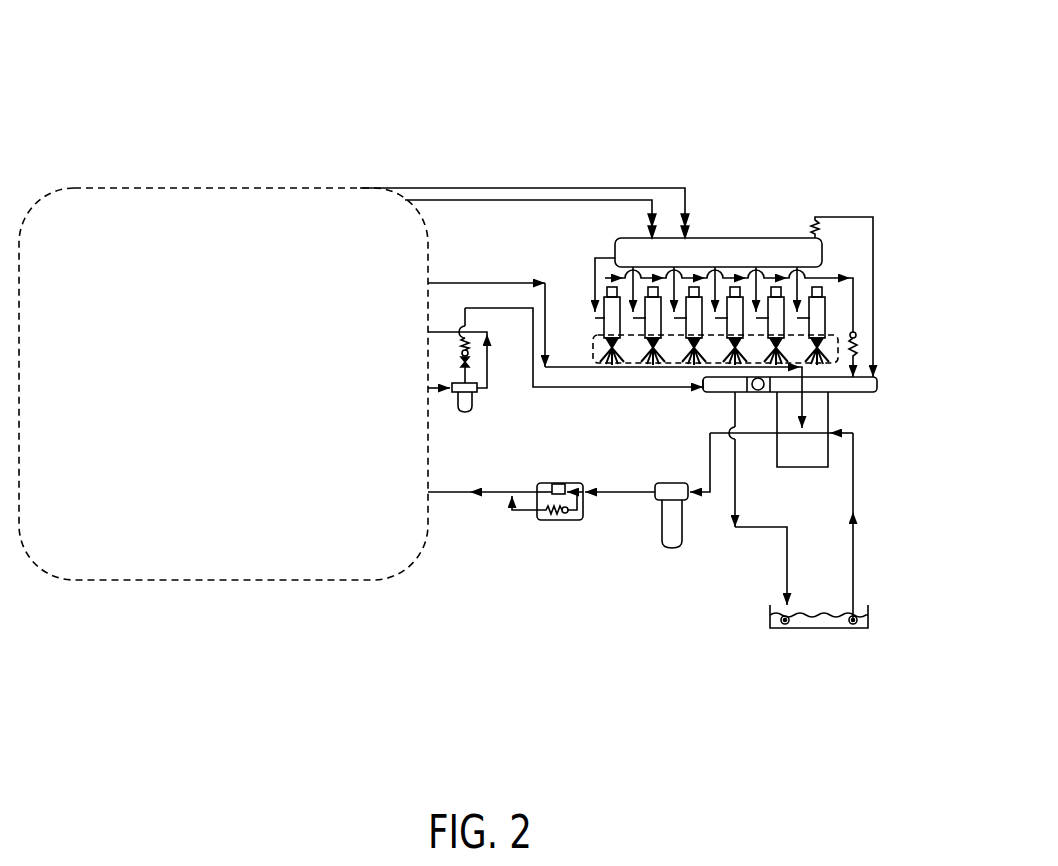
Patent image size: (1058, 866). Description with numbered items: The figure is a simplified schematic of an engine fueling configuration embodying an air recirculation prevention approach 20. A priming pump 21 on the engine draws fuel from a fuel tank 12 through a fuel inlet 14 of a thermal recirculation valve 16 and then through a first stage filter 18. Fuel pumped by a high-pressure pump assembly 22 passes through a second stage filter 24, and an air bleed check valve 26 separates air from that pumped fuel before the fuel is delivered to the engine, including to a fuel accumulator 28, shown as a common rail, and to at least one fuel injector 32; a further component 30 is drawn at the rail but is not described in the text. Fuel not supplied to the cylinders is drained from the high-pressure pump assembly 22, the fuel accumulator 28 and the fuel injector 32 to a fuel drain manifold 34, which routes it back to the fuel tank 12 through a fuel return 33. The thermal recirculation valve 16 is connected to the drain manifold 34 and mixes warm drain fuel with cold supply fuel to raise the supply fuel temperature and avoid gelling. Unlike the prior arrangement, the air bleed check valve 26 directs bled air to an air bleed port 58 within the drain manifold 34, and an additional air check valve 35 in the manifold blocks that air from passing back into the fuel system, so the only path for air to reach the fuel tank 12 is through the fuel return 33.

The fuel tank 12 is at (815, 625).
The fuel inlet 14 is at (857, 560).
The thermal recirculation valve 16 is at (817, 444).
The first stage filter 18 is at (672, 545).
The air recirculation prevention approach 20 is at (698, 89).
The priming pump 21 is at (578, 522).
The high-pressure pump assembly 22 is at (258, 580).
The second stage filter 24 is at (462, 412).
The air bleed check valve 26 is at (465, 324).
The fuel accumulator 28 is at (731, 238).
The pressure sensor 30 is at (818, 233).
The fuel injector 32 is at (772, 328).
The fuel return 33 is at (755, 530).
The fuel drain manifold 34 is at (847, 381).
The air check valve 35 is at (770, 383).
The air bleed port 58 is at (714, 390).